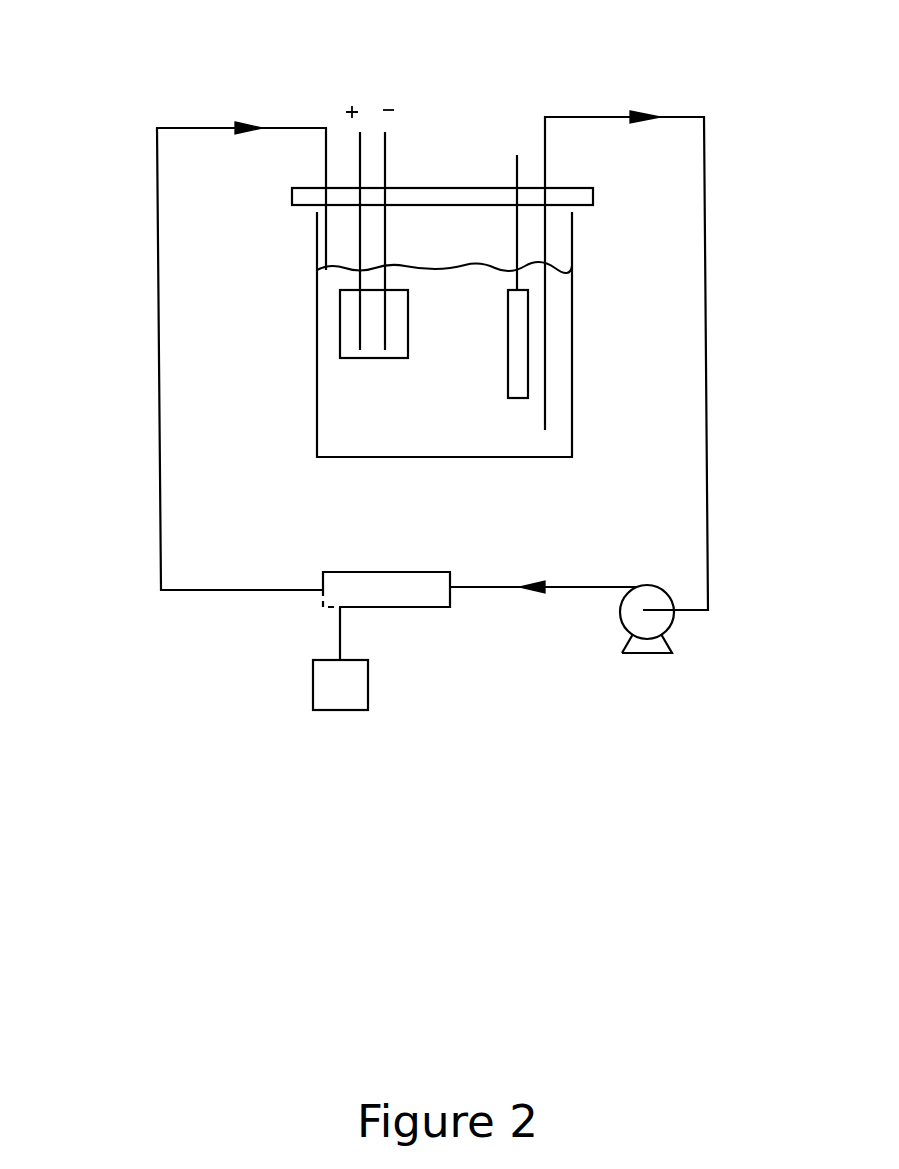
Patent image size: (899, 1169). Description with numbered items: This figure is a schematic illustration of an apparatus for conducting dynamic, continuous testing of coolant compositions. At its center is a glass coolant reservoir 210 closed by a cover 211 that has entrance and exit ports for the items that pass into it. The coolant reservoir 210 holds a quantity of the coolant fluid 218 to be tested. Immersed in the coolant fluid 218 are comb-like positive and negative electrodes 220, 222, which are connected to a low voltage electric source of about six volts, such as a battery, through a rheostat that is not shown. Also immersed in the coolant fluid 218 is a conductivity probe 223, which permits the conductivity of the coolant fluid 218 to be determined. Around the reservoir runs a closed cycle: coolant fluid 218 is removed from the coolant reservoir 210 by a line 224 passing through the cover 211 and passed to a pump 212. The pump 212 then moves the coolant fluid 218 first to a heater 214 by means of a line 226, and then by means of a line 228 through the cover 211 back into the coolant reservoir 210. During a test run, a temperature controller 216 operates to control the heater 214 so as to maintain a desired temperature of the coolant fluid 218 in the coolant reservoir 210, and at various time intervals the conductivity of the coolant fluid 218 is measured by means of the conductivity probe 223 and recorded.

The coolant reservoir 210 is at (572, 370).
The cover 211 is at (485, 187).
The pump 212 is at (673, 622).
The heater 214 is at (382, 607).
The temperature controller 216 is at (313, 697).
The coolant fluid 218 is at (490, 355).
The positive electrode 220 is at (357, 163).
The negative electrode 222 is at (388, 161).
The conductivity probe 223 is at (523, 335).
The line 224 is at (704, 195).
The line 226 is at (513, 587).
The line 228 is at (157, 318).